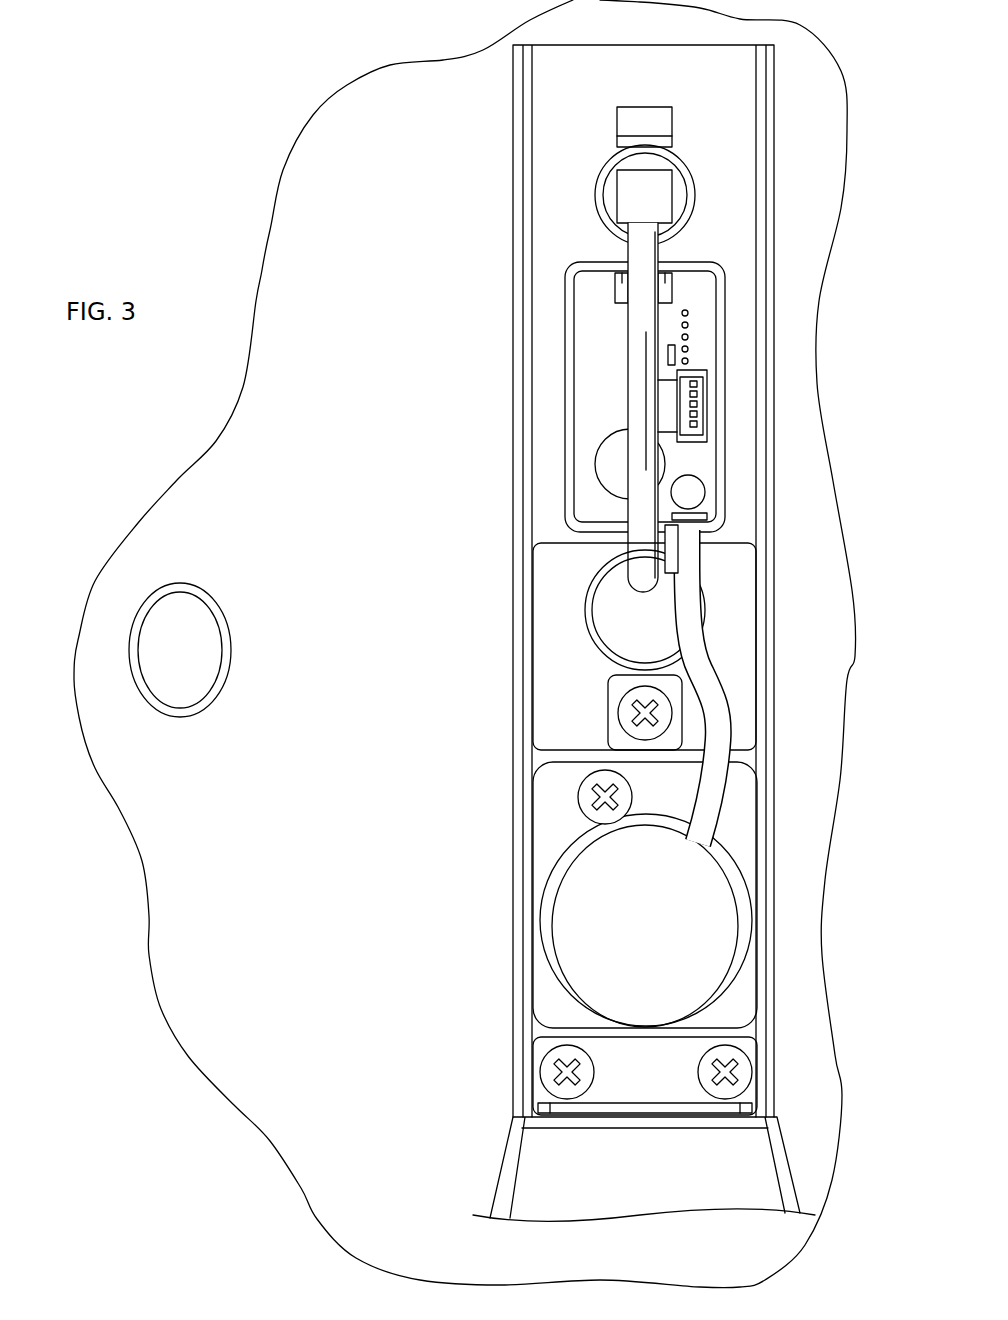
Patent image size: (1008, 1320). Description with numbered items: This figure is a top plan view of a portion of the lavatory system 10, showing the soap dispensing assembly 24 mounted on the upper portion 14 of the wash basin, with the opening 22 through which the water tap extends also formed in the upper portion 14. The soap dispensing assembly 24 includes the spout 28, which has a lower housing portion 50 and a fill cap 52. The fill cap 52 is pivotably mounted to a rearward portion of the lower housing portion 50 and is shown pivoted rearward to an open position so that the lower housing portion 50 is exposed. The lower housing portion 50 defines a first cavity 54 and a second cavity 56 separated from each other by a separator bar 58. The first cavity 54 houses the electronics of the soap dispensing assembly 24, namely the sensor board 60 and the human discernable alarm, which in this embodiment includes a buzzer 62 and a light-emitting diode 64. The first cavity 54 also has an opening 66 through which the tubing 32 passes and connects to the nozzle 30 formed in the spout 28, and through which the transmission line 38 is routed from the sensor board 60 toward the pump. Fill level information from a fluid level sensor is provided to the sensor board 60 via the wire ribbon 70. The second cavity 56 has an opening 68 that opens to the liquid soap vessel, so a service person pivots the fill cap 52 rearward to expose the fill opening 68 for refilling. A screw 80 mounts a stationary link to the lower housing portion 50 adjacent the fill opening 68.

The lavatory system 10 is at (186, 1133).
The upper portion 14 is at (159, 939).
The opening 22 is at (177, 659).
The soap dispensing assembly 24 is at (445, 1196).
The spout 28 is at (478, 407).
The nozzle 30 is at (620, 202).
The tubing 32 is at (650, 250).
The transmission line 38 is at (677, 548).
The lower housing portion 50 is at (532, 163).
The fill cap 52 is at (550, 1192).
The first cavity 54 is at (551, 576).
The second cavity 56 is at (550, 1012).
The separator bar 58 is at (568, 750).
The sensor board 60 is at (604, 368).
The buzzer 62 is at (600, 486).
The light-emitting diode 64 is at (617, 297).
The opening 66 is at (620, 604).
The opening 68 is at (620, 913).
The wire ribbon 70 is at (695, 665).
The screw 80 is at (583, 798).